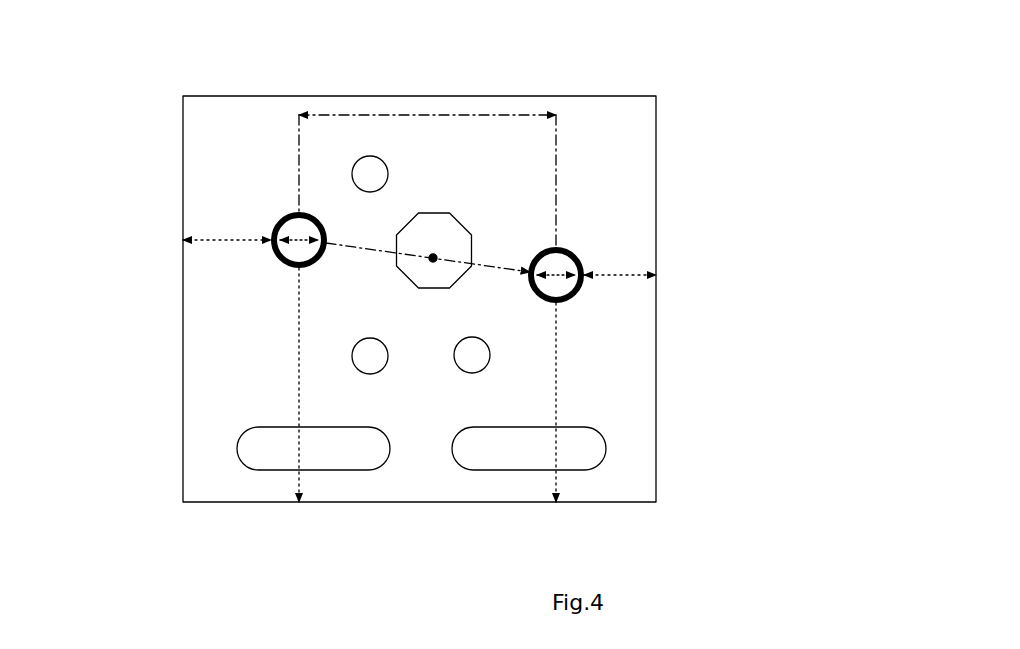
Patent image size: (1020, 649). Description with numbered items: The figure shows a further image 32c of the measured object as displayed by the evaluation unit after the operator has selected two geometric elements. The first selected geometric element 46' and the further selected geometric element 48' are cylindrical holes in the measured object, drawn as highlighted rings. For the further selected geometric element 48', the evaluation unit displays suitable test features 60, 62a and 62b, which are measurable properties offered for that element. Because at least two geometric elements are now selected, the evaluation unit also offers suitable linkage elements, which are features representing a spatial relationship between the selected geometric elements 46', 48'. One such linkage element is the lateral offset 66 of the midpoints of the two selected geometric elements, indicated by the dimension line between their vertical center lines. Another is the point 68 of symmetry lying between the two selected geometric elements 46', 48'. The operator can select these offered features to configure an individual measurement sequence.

The further image 32c is at (627, 143).
The selected geometric element 46' is at (183, 308).
The further selected geometric element 48' is at (656, 308).
The test feature 60 is at (562, 281).
The test feature 62a is at (557, 398).
The test feature 62b is at (620, 276).
The lateral offset 66 is at (345, 108).
The point of symmetry 68 is at (433, 262).